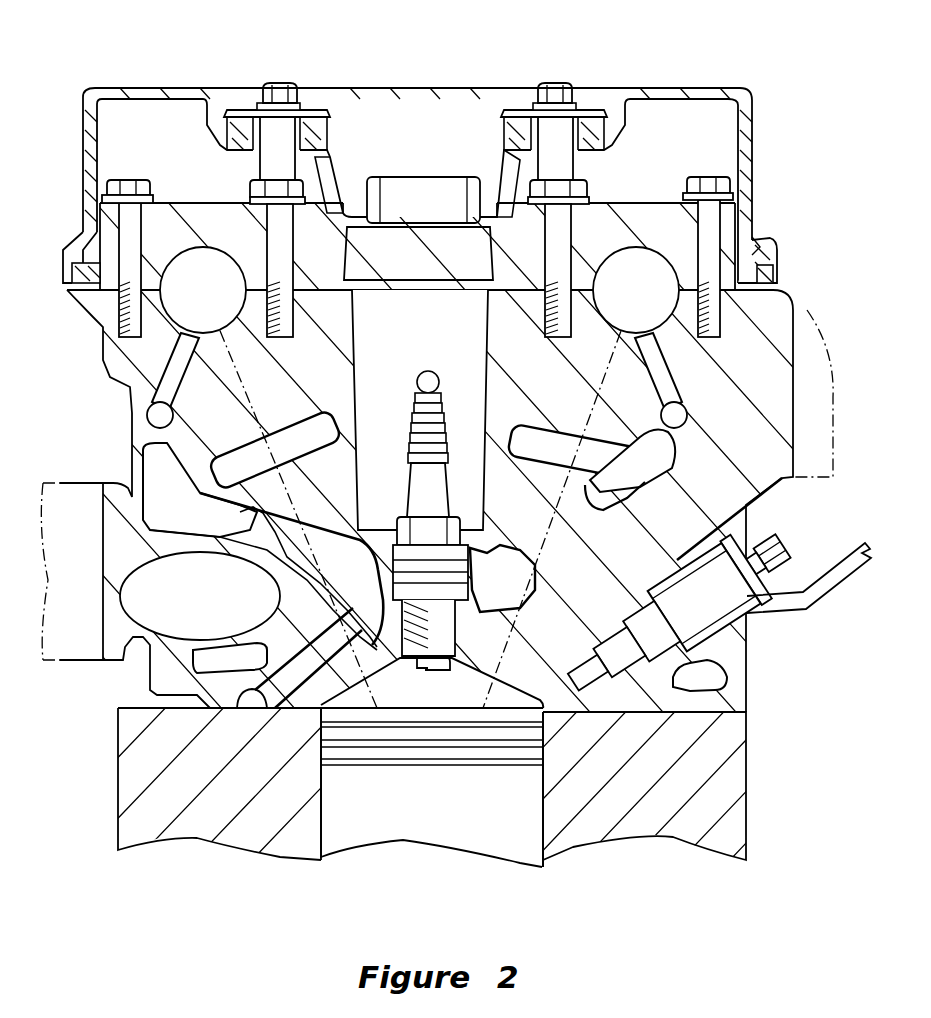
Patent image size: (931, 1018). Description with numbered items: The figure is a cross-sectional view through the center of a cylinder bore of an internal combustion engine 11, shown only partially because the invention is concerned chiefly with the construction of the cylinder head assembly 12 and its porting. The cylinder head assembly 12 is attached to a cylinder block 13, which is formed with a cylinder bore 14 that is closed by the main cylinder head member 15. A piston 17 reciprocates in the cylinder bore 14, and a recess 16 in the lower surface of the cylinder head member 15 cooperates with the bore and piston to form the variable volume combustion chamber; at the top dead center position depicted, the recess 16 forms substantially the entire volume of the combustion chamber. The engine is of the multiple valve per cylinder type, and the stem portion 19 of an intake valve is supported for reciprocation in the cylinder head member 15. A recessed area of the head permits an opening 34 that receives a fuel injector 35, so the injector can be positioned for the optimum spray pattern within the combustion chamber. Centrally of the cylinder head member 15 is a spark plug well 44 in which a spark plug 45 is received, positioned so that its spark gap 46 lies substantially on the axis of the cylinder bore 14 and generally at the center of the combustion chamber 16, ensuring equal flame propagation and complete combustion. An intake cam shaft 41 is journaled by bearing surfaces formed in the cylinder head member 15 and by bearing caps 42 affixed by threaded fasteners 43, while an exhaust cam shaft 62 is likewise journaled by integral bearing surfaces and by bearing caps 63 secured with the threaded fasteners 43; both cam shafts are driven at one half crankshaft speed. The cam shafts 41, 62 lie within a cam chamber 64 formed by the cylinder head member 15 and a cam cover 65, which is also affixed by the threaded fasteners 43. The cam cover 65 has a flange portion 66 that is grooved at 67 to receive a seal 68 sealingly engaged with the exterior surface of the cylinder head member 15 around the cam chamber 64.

The internal combustion engine 11 is at (797, 78).
The cylinder head assembly 12 is at (838, 343).
The cylinder block 13 is at (737, 793).
The cylinder bore 14 is at (542, 782).
The main cylinder head member 15 is at (737, 690).
The recess 16 is at (453, 698).
The piston 17 is at (420, 820).
The stem portion 19 is at (587, 407).
The opening 34 is at (668, 588).
The fuel injector 35 is at (707, 628).
The intake cam shaft 41 is at (642, 258).
The bearing cap 42 is at (663, 210).
The threaded fastener 43 is at (278, 178).
The spark plug well 44 is at (352, 323).
The spark plug 45 is at (410, 493).
The spark gap 46 is at (423, 673).
The exhaust cam shaft 62 is at (140, 343).
The bearing cap 63 is at (193, 233).
The cam chamber 64 is at (113, 138).
The cam cover 65 is at (752, 126).
The flange portion 66 is at (773, 252).
The groove 67 is at (747, 247).
The seal 68 is at (773, 283).